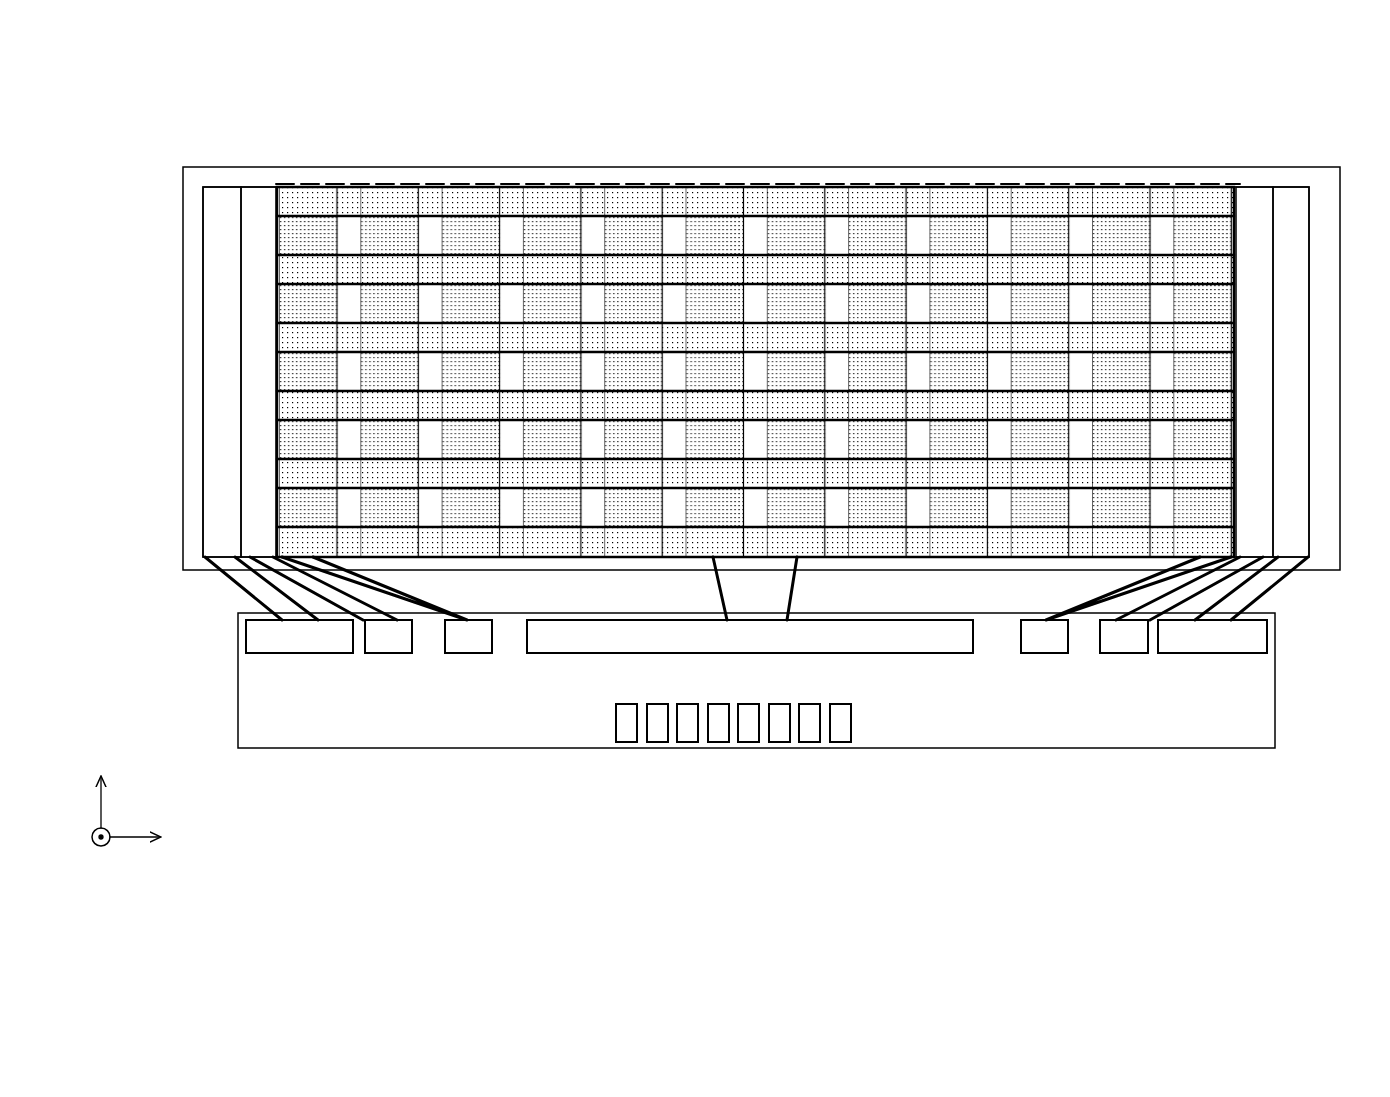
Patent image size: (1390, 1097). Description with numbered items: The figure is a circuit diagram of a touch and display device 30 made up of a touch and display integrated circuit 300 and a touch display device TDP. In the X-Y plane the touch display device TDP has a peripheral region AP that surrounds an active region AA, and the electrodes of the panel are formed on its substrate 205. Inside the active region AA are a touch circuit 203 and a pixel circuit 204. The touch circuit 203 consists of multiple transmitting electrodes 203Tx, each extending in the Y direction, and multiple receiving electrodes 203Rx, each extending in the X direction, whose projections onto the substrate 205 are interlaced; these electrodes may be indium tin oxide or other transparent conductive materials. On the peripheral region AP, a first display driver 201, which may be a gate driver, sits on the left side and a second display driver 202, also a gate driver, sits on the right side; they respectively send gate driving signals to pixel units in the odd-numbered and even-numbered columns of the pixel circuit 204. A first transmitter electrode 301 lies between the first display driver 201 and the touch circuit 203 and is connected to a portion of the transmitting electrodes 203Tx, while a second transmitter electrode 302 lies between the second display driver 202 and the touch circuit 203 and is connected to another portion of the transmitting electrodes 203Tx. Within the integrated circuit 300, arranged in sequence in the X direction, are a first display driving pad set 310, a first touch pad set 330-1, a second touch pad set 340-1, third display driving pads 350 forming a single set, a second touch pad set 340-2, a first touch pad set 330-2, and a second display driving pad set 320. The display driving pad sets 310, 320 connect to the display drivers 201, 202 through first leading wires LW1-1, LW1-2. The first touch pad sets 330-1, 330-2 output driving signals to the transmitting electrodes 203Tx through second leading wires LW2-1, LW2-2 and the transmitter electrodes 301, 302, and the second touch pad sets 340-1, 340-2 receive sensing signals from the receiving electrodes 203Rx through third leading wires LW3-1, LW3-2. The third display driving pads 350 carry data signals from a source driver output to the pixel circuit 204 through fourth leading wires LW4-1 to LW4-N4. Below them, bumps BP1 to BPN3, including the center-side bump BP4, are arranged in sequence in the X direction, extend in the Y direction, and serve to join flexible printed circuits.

The touch and display device 30 is at (1370, 829).
The substrate 205 is at (89, 129).
The touch display device TDP is at (182, 179).
The peripheral region AP is at (194, 258).
The active region AA is at (1068, 184).
The first display driver 201 is at (222, 200).
The second display driver 202 is at (1292, 197).
The first transmitter electrode 301 is at (258, 200).
The second transmitter electrode 302 is at (1253, 195).
The touch circuit 203 is at (1104, 148).
The pixel circuit 204 is at (755, 336).
The transmitting electrodes 203Tx is at (312, 235).
The receiving electrodes 203Rx is at (432, 195).
The touch and display integrated circuit 300 is at (238, 688).
The first display driving pad set 310 is at (300, 653).
The second display driving pad set 320 is at (1215, 653).
The first touch pad set 330-1 is at (404, 653).
The first touch pad set 330-2 is at (1110, 653).
The second touch pad set 340-1 is at (470, 653).
The second touch pad set 340-2 is at (1045, 653).
The third display driving pads 350 is at (585, 653).
The bump BP1 is at (626, 742).
The bump BP4 is at (717, 742).
The bump BPN3 is at (838, 742).
The first leading wire LW1-1 is at (257, 588).
The first leading wire LW1-2 is at (1257, 589).
The second leading wire LW2-1 is at (362, 610).
The second leading wire LW2-2 is at (1153, 610).
The third leading wire LW3-1 is at (423, 598).
The third leading wire LW3-2 is at (1095, 598).
The fourth leading wire LW4-1 is at (717, 590).
The fourth leading wire LW4-N4 is at (803, 595).